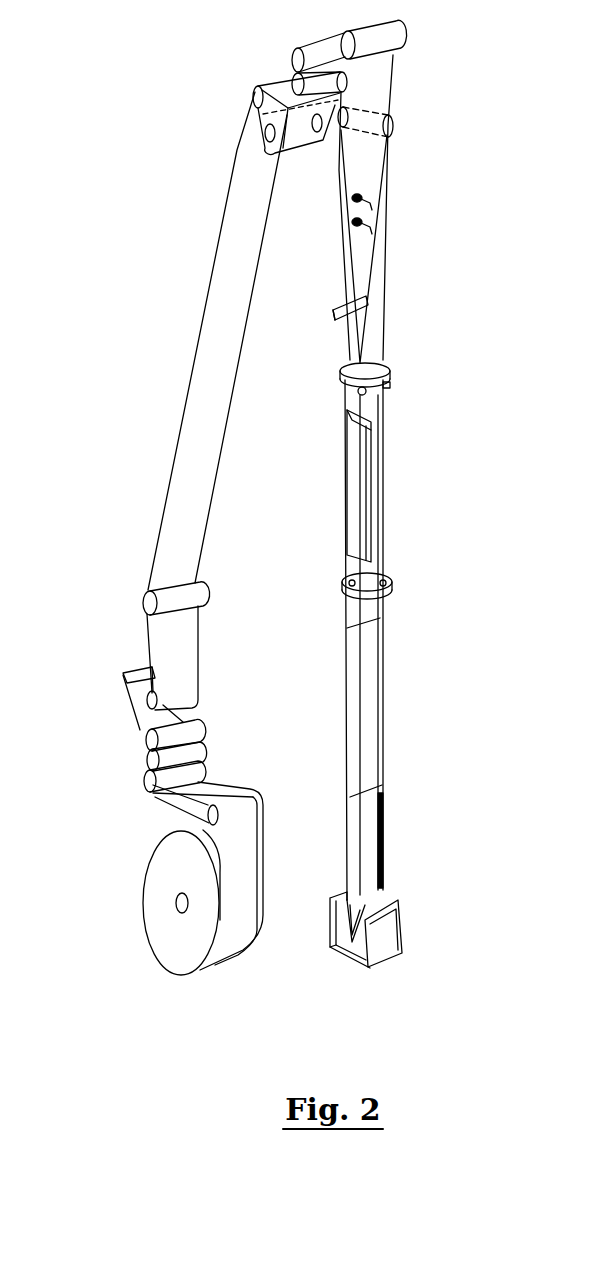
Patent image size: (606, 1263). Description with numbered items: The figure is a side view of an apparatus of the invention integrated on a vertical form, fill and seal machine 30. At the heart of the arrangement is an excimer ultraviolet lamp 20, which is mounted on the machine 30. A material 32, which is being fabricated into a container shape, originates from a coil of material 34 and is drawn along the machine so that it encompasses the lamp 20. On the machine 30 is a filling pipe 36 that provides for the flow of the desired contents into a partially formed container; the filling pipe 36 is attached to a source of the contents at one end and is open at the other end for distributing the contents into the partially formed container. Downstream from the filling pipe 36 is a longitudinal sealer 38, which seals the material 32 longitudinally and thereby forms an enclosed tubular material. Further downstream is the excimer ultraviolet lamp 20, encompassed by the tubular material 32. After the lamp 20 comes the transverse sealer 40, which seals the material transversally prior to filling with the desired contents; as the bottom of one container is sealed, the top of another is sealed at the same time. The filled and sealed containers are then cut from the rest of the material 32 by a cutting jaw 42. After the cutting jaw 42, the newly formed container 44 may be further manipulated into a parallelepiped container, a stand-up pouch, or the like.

The excimer ultraviolet lamp 20 is at (388, 688).
The vertical form, fill and seal machine 30 is at (428, 288).
The material 32 is at (190, 285).
The coil of material 34 is at (152, 852).
The filling pipe 36 is at (333, 310).
The longitudinal sealer 38 is at (362, 505).
The transverse sealer 40 is at (380, 888).
The cutting jaw 42 is at (402, 922).
The container 44 is at (350, 940).